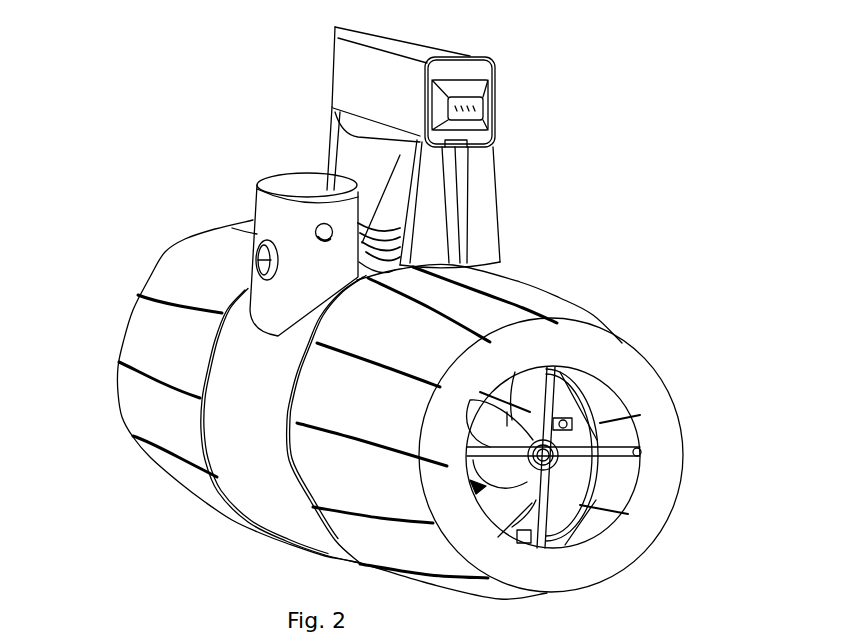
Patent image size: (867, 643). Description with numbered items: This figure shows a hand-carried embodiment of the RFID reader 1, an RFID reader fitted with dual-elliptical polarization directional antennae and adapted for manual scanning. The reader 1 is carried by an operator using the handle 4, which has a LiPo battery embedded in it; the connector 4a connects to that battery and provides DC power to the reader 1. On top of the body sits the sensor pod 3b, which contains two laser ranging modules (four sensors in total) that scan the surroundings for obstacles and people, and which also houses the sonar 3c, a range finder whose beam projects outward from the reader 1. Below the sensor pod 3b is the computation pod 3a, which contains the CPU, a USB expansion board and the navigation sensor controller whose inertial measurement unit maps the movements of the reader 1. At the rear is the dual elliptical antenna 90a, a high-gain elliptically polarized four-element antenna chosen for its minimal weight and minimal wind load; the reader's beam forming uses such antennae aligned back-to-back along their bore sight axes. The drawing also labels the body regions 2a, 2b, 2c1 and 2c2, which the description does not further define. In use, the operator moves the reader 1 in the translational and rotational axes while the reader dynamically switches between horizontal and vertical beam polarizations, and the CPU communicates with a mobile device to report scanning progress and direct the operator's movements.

The RFID reader 1 is at (573, 178).
The rear hull section 2a is at (559, 297).
The front hull section (nose) 2b is at (190, 252).
The middle hull section 2c1 is at (237, 412).
The hull connector region 2c2 is at (373, 257).
The computation pod 3a is at (263, 315).
The sensor pod 3b is at (270, 177).
The sonar 3c is at (257, 262).
The handle 4 is at (342, 92).
The connector 4a is at (478, 108).
The dual elliptical antenna 90a is at (607, 453).